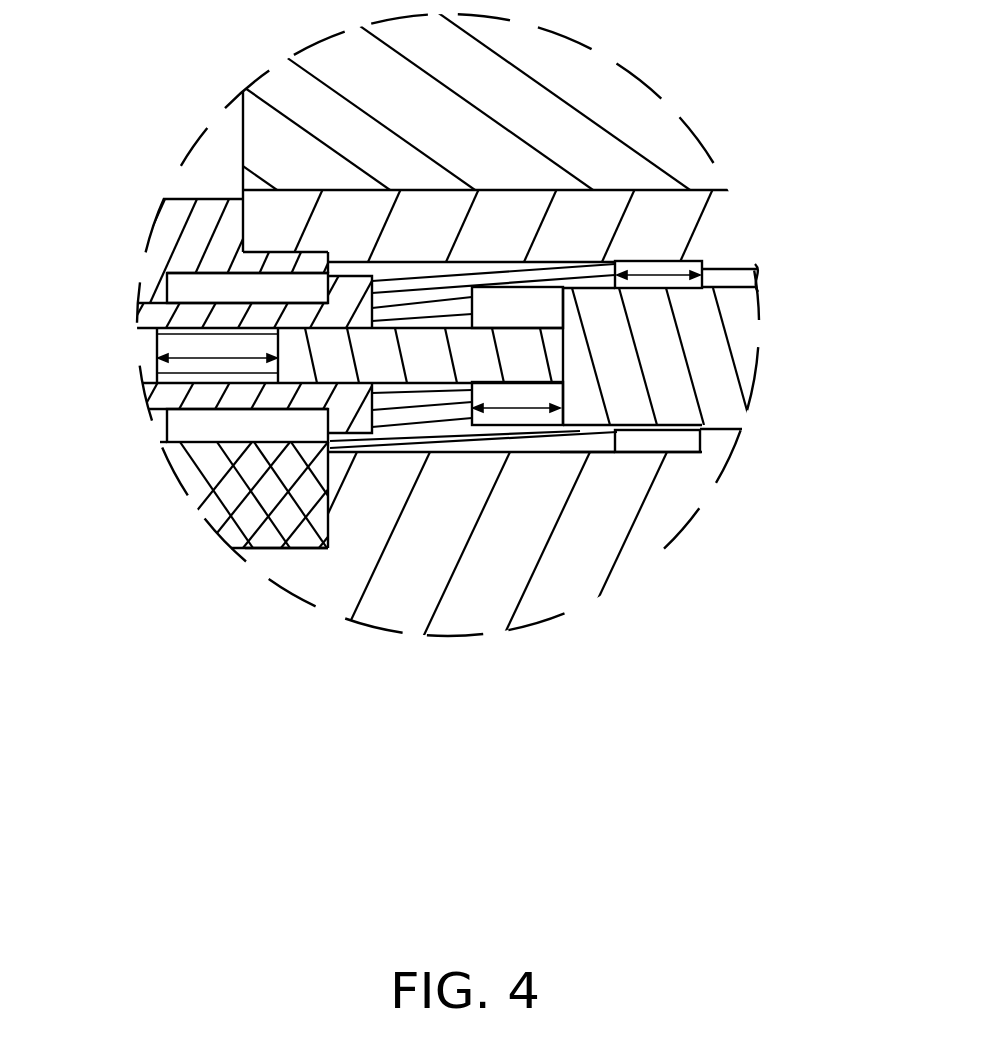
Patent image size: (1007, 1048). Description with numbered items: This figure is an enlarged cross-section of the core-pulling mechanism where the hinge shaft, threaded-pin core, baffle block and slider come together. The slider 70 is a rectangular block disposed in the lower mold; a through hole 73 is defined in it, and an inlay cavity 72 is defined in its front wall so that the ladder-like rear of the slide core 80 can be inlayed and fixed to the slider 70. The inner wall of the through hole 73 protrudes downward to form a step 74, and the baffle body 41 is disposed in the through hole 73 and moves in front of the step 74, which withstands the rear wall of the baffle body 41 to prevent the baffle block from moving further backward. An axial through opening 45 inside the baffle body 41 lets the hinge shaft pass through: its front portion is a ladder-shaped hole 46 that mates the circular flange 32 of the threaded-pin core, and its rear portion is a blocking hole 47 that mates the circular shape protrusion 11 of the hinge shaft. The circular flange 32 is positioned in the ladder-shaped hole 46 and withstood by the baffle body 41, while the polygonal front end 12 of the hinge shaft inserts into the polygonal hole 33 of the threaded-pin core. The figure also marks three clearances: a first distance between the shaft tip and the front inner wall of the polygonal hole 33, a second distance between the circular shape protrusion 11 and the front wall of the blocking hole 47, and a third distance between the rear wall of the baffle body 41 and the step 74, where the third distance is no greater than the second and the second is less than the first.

The circular shape protrusion 11 is at (723, 393).
The front end 12 is at (333, 372).
The circular flange 32 is at (335, 432).
The polygonal hole 33 is at (183, 351).
The baffle body 41 is at (587, 452).
The axial through opening 45 is at (420, 327).
The ladder-shaped hole 46 is at (358, 438).
The blocking hole 47 is at (498, 413).
The slider 70 is at (650, 233).
The inlay cavity 72 is at (267, 547).
The through hole 73 is at (688, 270).
The step 74 is at (702, 268).
The slide core 80 is at (198, 243).